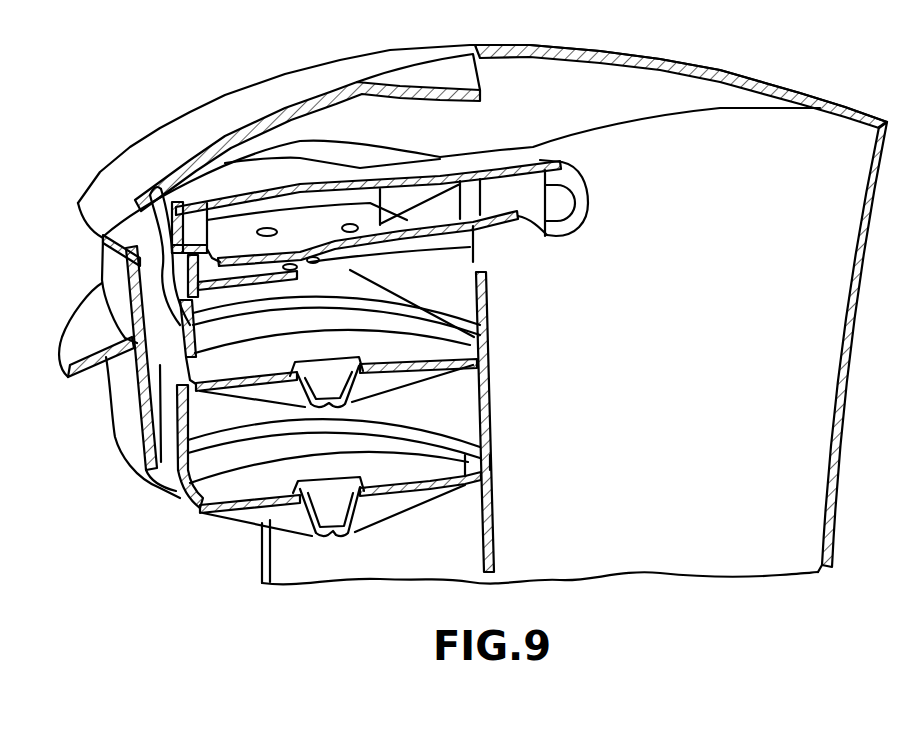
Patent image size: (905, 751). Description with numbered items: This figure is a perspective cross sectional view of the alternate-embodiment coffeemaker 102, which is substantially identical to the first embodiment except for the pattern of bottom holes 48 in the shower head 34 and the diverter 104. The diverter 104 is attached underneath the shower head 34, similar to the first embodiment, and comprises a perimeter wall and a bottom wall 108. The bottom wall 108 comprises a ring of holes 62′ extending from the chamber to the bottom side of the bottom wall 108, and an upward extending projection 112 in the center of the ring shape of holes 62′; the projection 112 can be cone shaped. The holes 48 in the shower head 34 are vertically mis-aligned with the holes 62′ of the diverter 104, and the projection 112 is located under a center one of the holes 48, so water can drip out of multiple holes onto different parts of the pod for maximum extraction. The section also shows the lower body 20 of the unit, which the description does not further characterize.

The coffeemaker 102 is at (733, 73).
The base body 20 is at (132, 463).
The diverter 104 is at (480, 243).
The shower head 34 is at (592, 205).
The holes 48 is at (345, 224).
The holes 62′ is at (292, 268).
The bottom wall 108 is at (492, 296).
The projection 112 is at (480, 362).